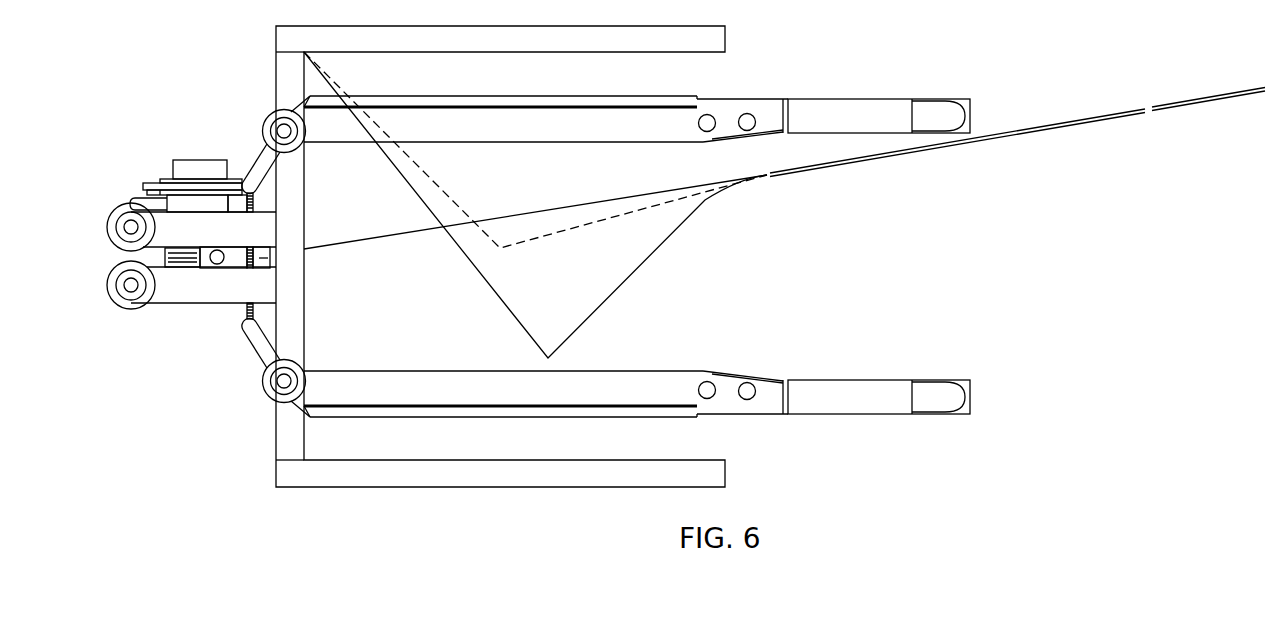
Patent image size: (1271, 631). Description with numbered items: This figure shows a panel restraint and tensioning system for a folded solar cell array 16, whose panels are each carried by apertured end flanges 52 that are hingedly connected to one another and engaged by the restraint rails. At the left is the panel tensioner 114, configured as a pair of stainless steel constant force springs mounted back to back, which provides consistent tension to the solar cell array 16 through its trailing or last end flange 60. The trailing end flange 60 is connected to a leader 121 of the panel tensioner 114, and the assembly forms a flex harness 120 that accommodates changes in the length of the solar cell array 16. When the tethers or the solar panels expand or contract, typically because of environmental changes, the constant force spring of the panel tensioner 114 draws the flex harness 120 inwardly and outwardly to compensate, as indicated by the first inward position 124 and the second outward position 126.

The solar cell array 16 is at (1017, 129).
The end flange 52 is at (1042, 122).
The trailing end flange 60 is at (620, 198).
The panel tensioner 114 is at (122, 308).
The flex harness 120 is at (581, 205).
The leader 121 is at (507, 216).
The first inward position 124 is at (662, 245).
The second outward position 126 is at (520, 243).